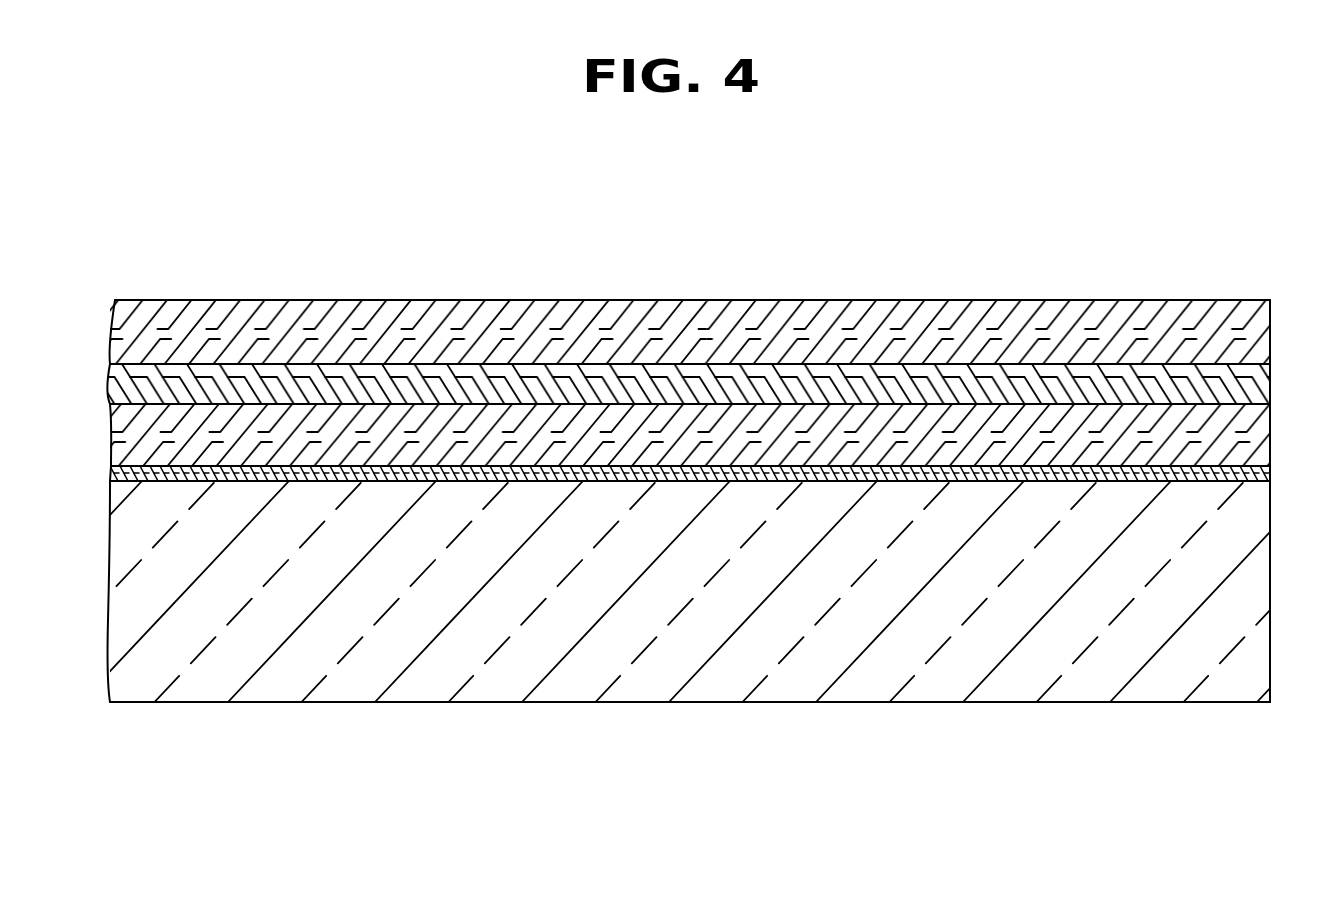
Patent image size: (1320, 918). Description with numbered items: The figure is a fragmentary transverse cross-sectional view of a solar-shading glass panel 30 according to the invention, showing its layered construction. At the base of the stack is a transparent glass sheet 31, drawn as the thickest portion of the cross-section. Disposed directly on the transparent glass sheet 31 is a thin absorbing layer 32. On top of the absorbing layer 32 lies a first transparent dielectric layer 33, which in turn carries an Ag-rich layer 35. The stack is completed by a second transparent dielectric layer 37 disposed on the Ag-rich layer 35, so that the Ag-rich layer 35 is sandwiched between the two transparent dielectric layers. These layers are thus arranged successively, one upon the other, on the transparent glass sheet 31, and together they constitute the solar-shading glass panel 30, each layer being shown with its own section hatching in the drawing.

The solar-shading glass panel 30 is at (1203, 246).
The transparent glass sheet 31 is at (912, 640).
The absorbing layer 32 is at (114, 470).
The first transparent dielectric layer 33 is at (114, 438).
The Ag-rich layer 35 is at (112, 378).
The second transparent dielectric layer 37 is at (128, 318).